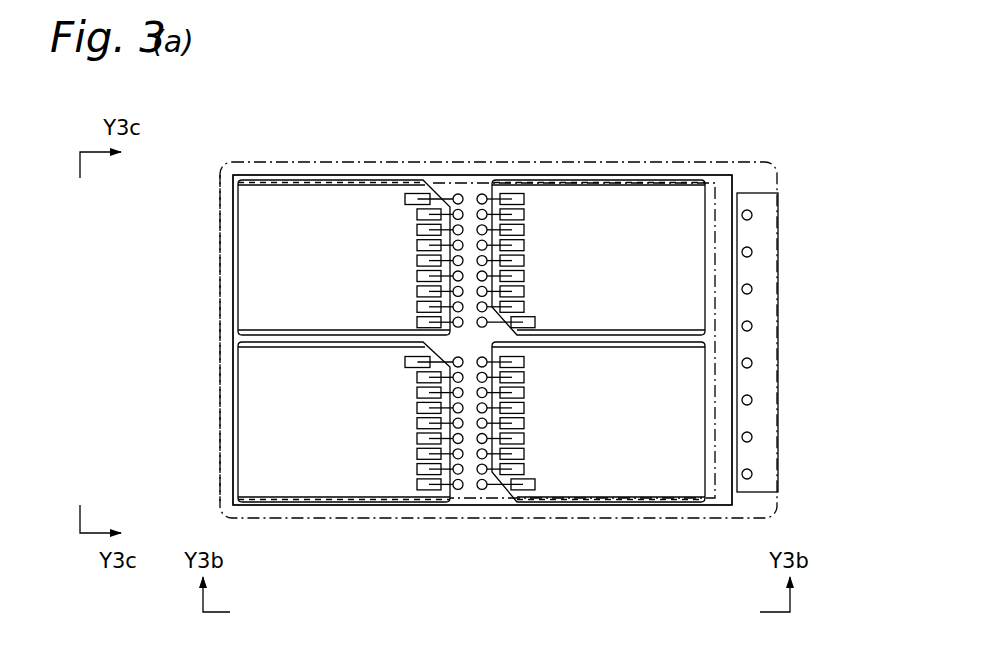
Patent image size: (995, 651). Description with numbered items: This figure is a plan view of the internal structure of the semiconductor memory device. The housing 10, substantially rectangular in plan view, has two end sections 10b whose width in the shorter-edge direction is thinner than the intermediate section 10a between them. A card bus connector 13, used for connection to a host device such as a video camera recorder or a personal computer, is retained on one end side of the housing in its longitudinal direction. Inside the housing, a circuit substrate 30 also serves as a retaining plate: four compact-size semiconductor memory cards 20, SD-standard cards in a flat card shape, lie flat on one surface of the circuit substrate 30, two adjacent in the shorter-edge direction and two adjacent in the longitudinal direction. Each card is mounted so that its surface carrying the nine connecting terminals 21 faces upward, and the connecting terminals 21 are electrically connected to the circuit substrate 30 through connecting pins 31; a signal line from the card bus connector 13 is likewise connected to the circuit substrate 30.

The housing 10 is at (697, 158).
The intermediate section 10a is at (222, 333).
The end section 10b is at (222, 168).
The card bus connector 13 is at (779, 312).
The compact-size semiconductor memory card 20 is at (297, 203).
The connecting terminal 21 is at (413, 230).
The circuit substrate 30 is at (742, 183).
The connecting pin 31 is at (437, 190).